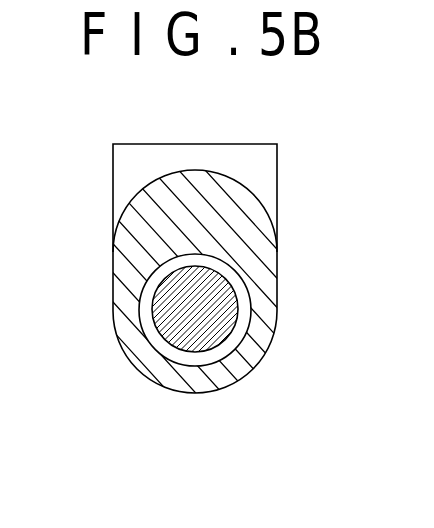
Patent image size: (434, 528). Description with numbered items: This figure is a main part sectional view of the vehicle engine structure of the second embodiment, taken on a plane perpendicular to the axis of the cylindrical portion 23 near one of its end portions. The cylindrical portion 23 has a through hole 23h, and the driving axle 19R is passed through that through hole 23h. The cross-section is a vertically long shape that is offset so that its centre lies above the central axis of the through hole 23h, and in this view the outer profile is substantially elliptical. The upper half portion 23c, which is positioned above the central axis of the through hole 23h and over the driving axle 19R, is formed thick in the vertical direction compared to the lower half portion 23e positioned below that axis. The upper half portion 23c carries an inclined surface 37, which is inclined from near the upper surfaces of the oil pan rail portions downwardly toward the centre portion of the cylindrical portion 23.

The driving axle 19R is at (225, 322).
The cylindrical portion 23 is at (277, 243).
The upper half portion 23c is at (143, 220).
The lower half portion 23e is at (197, 380).
The through hole 23h is at (147, 283).
The inclined surface 37 is at (232, 162).